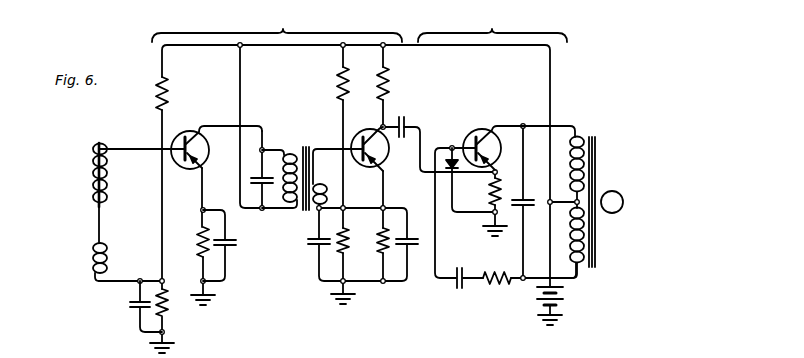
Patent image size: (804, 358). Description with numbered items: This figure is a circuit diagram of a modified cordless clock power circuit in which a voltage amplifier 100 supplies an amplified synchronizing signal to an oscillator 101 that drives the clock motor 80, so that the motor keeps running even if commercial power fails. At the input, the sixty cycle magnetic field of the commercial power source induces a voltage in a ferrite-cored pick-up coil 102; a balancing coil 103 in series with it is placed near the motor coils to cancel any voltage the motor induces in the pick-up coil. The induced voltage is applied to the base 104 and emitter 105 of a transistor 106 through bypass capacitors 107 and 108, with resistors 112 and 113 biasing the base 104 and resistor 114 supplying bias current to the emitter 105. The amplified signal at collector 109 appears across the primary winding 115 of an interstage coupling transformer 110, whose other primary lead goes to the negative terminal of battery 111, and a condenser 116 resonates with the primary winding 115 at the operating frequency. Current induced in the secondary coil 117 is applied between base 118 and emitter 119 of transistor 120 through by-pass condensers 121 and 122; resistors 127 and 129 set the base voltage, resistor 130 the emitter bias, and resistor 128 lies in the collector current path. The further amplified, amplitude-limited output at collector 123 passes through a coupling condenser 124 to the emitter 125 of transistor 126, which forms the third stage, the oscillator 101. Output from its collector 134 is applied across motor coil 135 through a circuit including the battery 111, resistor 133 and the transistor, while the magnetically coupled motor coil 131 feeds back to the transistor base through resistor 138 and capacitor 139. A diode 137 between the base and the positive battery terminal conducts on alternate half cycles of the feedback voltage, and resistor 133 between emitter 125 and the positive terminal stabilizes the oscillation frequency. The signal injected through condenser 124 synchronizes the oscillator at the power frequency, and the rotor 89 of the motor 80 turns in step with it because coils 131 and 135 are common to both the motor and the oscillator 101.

The voltage amplifier 100 is at (277, 25).
The oscillator 101 is at (492, 25).
The pick-up coil 102 is at (93, 173).
The balancing coil 103 is at (93, 259).
The base 104 is at (181, 135).
The emitter 105 is at (200, 161).
The transistor 106 is at (206, 136).
The bypass capacitor 107 is at (134, 309).
The bypass capacitor 108 is at (232, 244).
The collector 109 is at (189, 134).
The interstage coupling transformer 110 is at (305, 147).
The battery 111 is at (562, 304).
The resistor 112 is at (170, 312).
The resistor 113 is at (156, 90).
The resistor 114 is at (199, 232).
The primary winding 115 is at (283, 155).
The condenser 116 is at (248, 184).
The secondary coil 117 is at (328, 195).
The base 118 is at (362, 133).
The emitter 119 is at (378, 160).
The transistor 120 is at (387, 149).
The by-pass condenser 121 is at (313, 245).
The by-pass condenser 122 is at (411, 250).
The collector 123 is at (367, 136).
The coupling condenser 124 is at (408, 117).
The emitter 125 is at (488, 159).
The transistor 126 is at (472, 132).
The resistor 127 is at (336, 80).
The resistor 128 is at (391, 80).
The resistor 129 is at (348, 234).
The resistor 130 is at (379, 250).
The motor coil 131 is at (590, 237).
The resistor 133 is at (490, 196).
The collector 134 is at (478, 137).
The motor coil 135 is at (596, 153).
The diode 137 is at (425, 176).
The resistor 138 is at (494, 285).
The capacitor 139 is at (457, 285).
The motor 80 is at (597, 137).
The rotor 89 is at (624, 202).